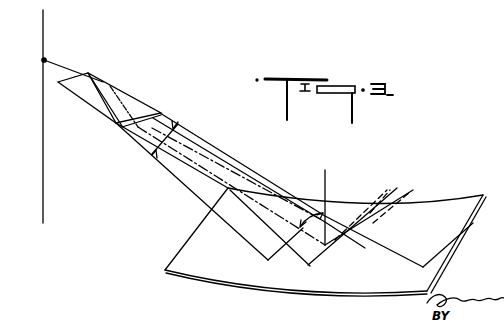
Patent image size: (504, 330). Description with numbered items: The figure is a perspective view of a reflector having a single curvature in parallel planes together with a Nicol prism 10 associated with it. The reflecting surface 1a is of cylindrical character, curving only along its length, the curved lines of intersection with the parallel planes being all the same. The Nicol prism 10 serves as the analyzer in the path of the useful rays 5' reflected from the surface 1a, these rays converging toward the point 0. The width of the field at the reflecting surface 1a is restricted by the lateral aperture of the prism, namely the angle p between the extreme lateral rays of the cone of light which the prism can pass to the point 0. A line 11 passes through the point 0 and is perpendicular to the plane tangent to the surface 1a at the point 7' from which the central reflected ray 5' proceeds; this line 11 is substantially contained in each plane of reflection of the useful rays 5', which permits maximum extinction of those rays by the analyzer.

The point of convergence 0 is at (46, 59).
The Nicol prism 10 is at (133, 91).
The line 11 is at (43, 178).
The useful rays 5' is at (294, 190).
The angle p is at (165, 139).
The point 7' is at (343, 220).
The reflecting surface 1a is at (393, 288).